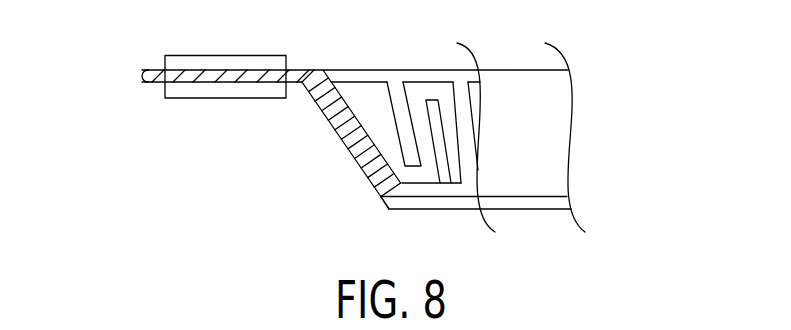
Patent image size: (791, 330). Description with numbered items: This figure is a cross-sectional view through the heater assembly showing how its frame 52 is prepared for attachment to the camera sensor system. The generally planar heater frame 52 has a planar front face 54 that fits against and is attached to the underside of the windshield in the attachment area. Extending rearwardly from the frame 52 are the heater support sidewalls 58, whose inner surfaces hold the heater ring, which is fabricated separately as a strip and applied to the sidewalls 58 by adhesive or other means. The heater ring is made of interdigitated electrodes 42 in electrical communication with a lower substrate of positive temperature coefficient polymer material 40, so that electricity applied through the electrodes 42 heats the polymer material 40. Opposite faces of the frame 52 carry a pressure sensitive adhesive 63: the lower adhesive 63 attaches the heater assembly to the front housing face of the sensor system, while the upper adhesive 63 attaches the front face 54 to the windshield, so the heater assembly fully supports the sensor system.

The positive temperature coefficient polymer material 40 is at (372, 92).
The interdigitated electrodes 42 is at (410, 83).
The heater frame 52 is at (145, 82).
The planar front face 54 is at (154, 67).
The heater support sidewalls 58 is at (362, 155).
The pressure sensitive adhesive 63 is at (235, 55).